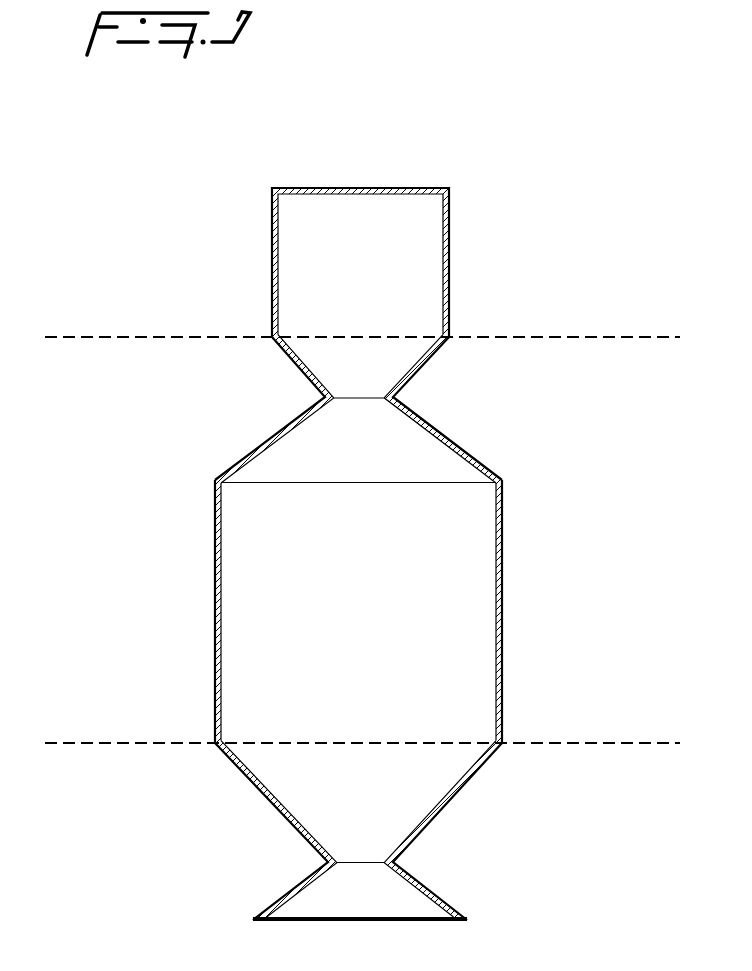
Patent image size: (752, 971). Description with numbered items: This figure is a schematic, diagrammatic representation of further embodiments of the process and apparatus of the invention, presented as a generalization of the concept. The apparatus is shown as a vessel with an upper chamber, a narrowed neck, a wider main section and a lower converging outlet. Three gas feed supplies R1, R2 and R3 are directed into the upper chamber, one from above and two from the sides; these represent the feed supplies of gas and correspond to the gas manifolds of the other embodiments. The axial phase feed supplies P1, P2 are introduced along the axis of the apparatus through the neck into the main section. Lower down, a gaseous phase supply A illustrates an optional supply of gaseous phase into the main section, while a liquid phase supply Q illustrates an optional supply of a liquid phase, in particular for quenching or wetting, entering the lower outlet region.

The feed supply of gas R1 is at (359, 172).
The feed supply of gas R2 is at (464, 214).
The feed supply of gas R3 is at (257, 214).
The axial phase feed supply P1 is at (444, 409).
The axial phase feed supply P2 is at (360, 408).
The gaseous phase supply option A is at (202, 514).
The liquid phase supply option Q is at (360, 852).